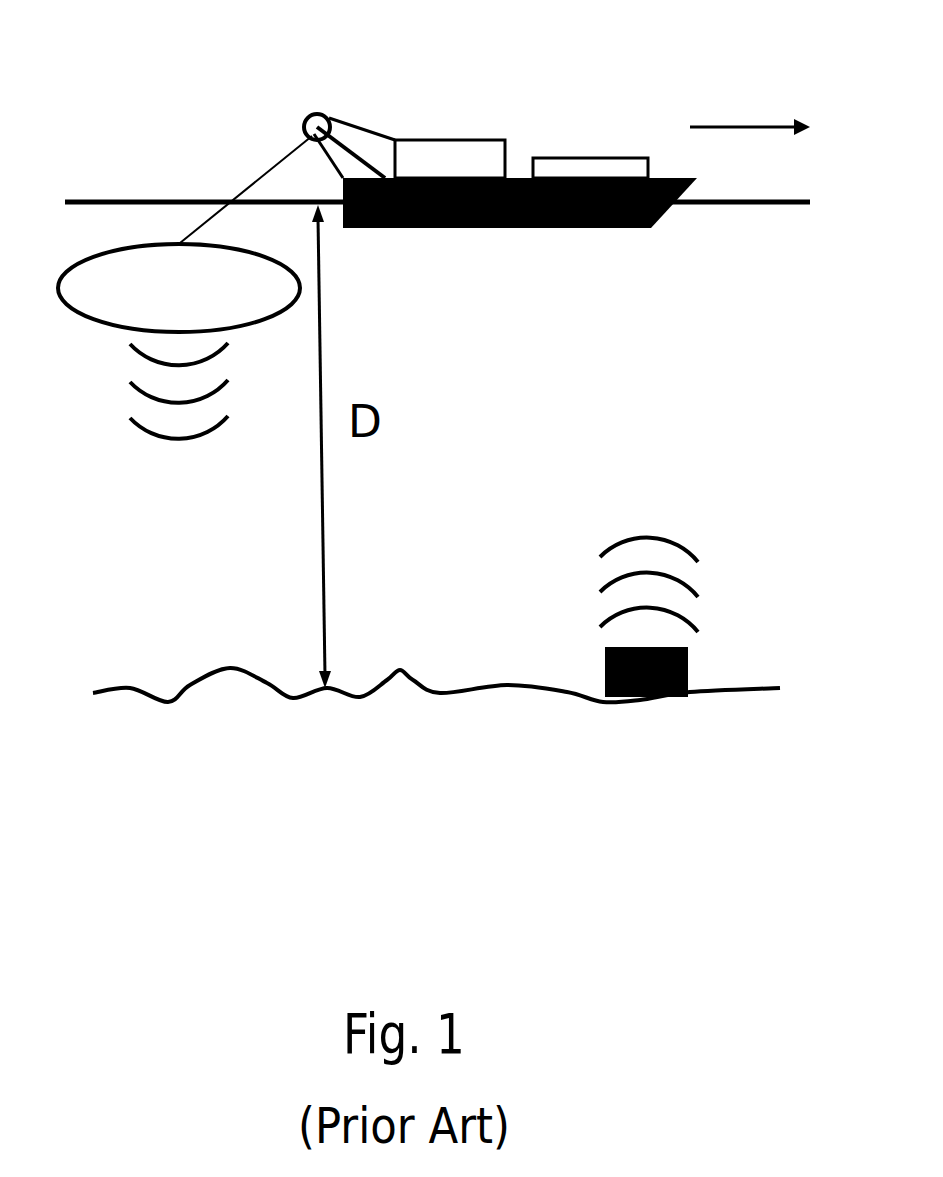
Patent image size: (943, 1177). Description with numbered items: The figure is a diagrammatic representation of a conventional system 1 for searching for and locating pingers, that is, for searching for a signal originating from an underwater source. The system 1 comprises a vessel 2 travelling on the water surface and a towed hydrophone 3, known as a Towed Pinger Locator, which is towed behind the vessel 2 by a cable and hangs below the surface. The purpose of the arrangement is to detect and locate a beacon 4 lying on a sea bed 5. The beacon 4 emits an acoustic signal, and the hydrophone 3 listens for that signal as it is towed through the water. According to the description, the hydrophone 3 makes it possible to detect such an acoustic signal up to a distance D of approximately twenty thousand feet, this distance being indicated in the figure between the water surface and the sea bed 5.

The system 1 is at (236, 106).
The vessel 2 is at (594, 146).
The towed hydrophone 3 is at (166, 307).
The beacon 4 is at (706, 675).
The sea bed 5 is at (210, 660).